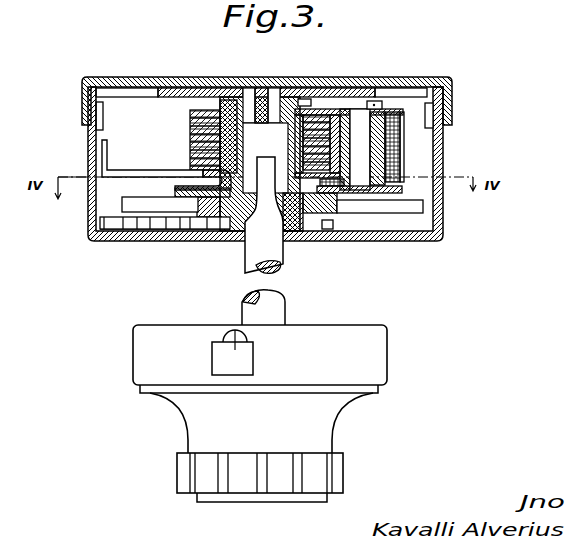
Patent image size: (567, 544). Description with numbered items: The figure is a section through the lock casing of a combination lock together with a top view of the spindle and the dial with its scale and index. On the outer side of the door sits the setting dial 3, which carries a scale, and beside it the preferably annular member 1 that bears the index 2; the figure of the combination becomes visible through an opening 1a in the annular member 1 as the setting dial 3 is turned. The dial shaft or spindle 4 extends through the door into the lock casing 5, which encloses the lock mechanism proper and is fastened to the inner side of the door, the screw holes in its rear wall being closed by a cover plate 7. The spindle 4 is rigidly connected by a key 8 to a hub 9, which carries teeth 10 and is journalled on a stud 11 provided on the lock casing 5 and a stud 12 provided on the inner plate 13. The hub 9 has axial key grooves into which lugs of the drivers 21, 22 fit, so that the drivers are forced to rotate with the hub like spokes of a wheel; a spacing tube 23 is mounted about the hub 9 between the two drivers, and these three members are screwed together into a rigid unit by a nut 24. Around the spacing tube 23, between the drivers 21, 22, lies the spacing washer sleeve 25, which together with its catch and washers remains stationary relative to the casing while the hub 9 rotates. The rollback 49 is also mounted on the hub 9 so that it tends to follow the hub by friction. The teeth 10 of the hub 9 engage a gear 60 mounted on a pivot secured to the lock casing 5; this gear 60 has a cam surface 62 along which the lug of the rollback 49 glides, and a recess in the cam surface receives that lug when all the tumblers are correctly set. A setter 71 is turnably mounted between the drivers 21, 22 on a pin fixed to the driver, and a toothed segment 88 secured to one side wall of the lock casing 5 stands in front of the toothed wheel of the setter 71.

The annular member 1 is at (386, 353).
The opening 1a is at (253, 355).
The index 2 is at (230, 332).
The setting dial 3 is at (340, 427).
The spindle 4 is at (252, 240).
The lock casing 5 is at (445, 138).
The cover plate 7 is at (365, 88).
The key 8 is at (245, 103).
The hub 9 is at (323, 229).
The teeth 10 is at (312, 220).
The stud 11 is at (293, 230).
The stud 12 is at (270, 145).
The inner plate 13 is at (332, 109).
The driver 21 is at (395, 112).
The driver 22 is at (153, 231).
The spacing tube 23 is at (213, 107).
The nut 24 is at (303, 99).
The spacing washer sleeve 25 is at (190, 105).
The rollback 49 is at (204, 215).
The gear 60 is at (99, 225).
The cam surface 62 is at (123, 207).
The setter 71 is at (443, 143).
The toothed segment 88 is at (133, 173).